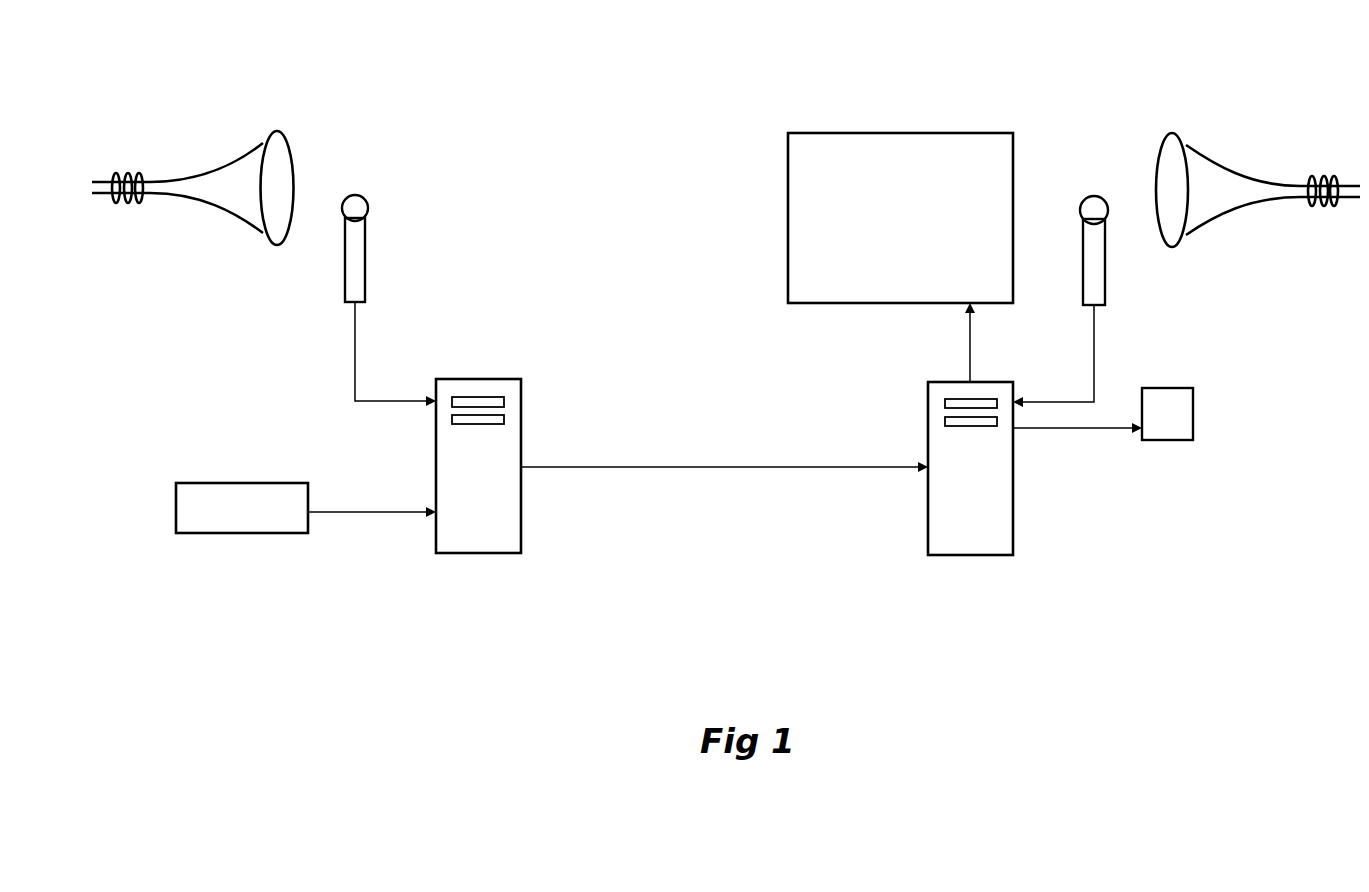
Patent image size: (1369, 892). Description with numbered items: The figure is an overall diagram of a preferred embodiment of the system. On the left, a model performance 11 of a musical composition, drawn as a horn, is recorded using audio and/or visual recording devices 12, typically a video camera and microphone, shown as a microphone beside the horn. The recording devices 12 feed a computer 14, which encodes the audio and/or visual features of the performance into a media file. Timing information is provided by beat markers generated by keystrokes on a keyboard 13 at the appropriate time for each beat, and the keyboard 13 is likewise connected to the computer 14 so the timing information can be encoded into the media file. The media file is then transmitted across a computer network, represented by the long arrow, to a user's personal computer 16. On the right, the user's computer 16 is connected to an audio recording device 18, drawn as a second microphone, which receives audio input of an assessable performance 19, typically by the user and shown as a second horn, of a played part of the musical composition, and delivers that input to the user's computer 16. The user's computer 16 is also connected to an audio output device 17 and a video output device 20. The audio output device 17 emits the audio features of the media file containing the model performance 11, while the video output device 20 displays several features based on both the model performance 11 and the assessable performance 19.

The model performance 11 is at (180, 178).
The audio and/or visual recording devices 12 is at (343, 265).
The keyboard 13 is at (176, 490).
The computer 14 is at (521, 481).
The user's personal computer 16 is at (1013, 483).
The audio output device 17 is at (1193, 396).
The audio recording device 18 is at (1107, 267).
The assessable performance 19 is at (1268, 182).
The video output device 20 is at (788, 220).